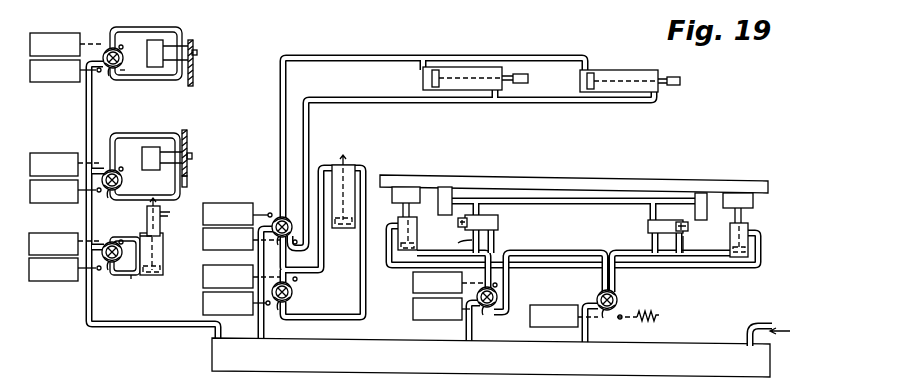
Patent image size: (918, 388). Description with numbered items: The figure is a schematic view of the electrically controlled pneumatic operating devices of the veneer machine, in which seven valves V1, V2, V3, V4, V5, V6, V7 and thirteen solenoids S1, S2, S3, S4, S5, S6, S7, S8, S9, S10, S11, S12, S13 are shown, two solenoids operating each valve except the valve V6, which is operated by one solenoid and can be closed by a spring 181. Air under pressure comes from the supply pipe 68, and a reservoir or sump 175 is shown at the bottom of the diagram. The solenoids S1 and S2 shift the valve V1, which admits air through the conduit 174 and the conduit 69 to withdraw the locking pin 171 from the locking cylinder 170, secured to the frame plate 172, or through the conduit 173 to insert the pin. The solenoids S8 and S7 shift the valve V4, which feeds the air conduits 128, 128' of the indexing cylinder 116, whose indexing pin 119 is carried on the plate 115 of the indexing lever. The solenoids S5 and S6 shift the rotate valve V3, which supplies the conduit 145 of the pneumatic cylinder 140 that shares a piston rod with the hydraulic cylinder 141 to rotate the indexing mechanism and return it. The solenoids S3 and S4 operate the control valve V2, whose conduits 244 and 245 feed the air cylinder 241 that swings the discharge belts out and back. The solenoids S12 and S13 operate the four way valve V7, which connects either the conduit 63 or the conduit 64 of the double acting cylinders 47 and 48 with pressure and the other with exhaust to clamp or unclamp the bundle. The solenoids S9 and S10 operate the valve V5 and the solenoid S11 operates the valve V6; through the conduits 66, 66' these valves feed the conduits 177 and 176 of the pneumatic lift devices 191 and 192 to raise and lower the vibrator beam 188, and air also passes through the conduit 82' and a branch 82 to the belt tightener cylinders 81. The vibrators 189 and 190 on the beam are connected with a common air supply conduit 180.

The air conduit 128 is at (146, 44).
The air conduit 128' is at (145, 86).
The indexing pin 119 is at (193, 40).
The indexing cylinder 116 is at (193, 58).
The plate of the indexing lever 115 is at (193, 78).
The air conduit 173 is at (150, 135).
The frame plate 172 is at (187, 134).
The locking pin 171 is at (189, 150).
The locking cylinder 170 is at (188, 165).
The air conduit 174 is at (163, 195).
The air conduit 145 is at (142, 236).
The hydraulic cylinder 141 is at (162, 217).
The pneumatic cylinder 140 is at (160, 265).
The air conduit 69 is at (126, 328).
The air supply conduit 68 is at (257, 330).
The air conduit 63 is at (390, 58).
The air conduit 64 is at (385, 99).
The double acting pneumatic cylinder 47 is at (479, 66).
The double acting pneumatic cylinder 48 is at (620, 68).
The air cylinder 241 is at (356, 175).
The fluid conduit 244 is at (323, 262).
The fluid conduit 245 is at (348, 312).
The air operated vibrator 189 is at (447, 187).
The vibrator beam 188 is at (553, 180).
The air operated vibrator 190 is at (702, 193).
The pneumatic lift device 191 is at (398, 220).
The pneumatic lift device 192 is at (750, 226).
The air supply conduit 180 is at (565, 205).
The belt tightener cylinder 81 is at (499, 219).
The conduit 82 is at (577, 239).
The conduit 82' is at (570, 239).
The air supply conduit 177 is at (545, 252).
The air supply conduit 176 is at (760, 262).
The conduit 66 is at (454, 322).
The conduit 66' is at (576, 313).
The spring 181 is at (655, 322).
The reservoir 175 is at (400, 366).
The valve V1 is at (106, 191).
The control valve V2 is at (279, 304).
The rotate valve V3 is at (108, 264).
The valve V4 is at (108, 72).
The valve V5 is at (483, 309).
The valve V6 is at (618, 298).
The four way valve V7 is at (275, 216).
The solenoid S1 is at (54, 164).
The lock solenoid S2 is at (54, 191).
The solenoid S3 is at (228, 276).
The solenoid S4 is at (228, 303).
The solenoid S5 is at (53, 244).
The solenoid S6 is at (53, 269).
The solenoid S7 is at (55, 71).
The solenoid S8 is at (55, 44).
The solenoid S9 is at (437, 282).
The solenoid S10 is at (437, 309).
The solenoid S11 is at (554, 316).
The clamp solenoid S12 is at (228, 239).
The solenoid S13 is at (228, 214).